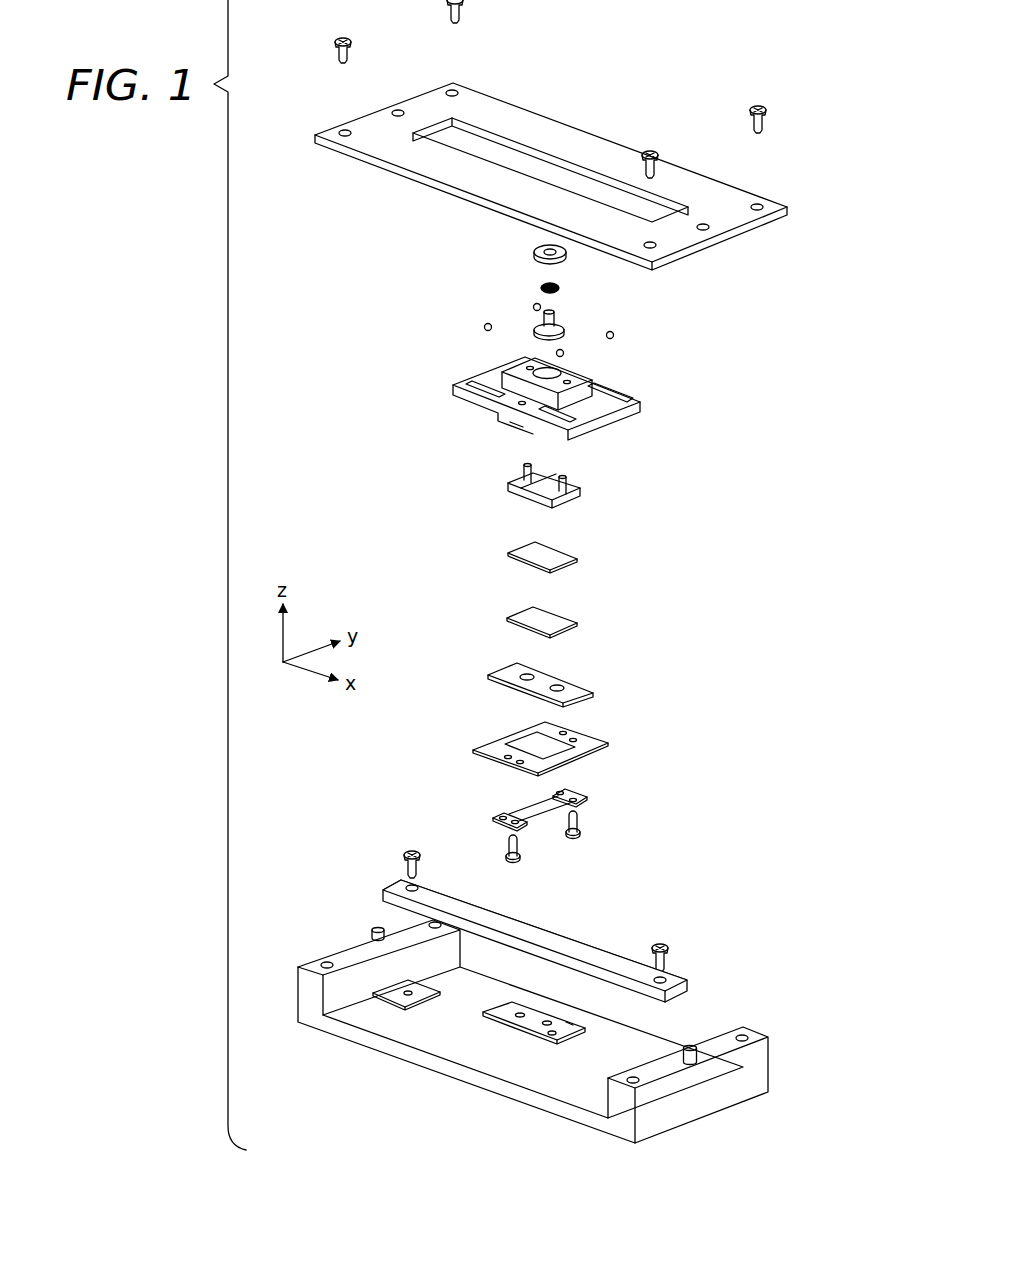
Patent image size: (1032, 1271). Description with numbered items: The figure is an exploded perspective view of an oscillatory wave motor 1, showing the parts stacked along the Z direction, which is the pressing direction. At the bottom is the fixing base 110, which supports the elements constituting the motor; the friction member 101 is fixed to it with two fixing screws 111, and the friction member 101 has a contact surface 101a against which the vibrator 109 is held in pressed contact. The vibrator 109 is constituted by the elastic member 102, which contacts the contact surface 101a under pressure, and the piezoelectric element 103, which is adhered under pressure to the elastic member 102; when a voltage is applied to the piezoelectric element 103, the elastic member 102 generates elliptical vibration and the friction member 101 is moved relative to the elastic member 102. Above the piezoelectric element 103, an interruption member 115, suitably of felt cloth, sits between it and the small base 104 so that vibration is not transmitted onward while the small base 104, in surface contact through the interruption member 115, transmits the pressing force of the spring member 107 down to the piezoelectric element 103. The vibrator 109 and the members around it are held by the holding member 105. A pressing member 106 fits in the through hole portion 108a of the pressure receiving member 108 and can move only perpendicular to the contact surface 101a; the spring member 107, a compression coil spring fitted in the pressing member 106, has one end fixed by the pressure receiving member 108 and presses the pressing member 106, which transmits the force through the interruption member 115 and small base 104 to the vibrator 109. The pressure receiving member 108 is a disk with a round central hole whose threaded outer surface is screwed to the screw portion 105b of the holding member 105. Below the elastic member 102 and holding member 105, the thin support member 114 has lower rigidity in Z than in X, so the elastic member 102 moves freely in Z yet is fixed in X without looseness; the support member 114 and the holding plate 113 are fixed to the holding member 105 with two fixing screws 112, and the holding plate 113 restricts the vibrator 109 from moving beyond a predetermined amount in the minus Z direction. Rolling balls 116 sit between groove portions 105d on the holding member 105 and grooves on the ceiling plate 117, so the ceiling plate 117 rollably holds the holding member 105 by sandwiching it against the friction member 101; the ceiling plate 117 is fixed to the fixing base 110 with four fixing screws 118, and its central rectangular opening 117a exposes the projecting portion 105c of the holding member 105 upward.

The oscillatory wave motor 1 is at (780, 360).
The friction member 101 is at (690, 983).
The contact surface 101a is at (587, 948).
The elastic member 102 is at (595, 688).
The piezoelectric element 103 is at (578, 620).
The small base 104 is at (582, 488).
The holding member 105 is at (647, 403).
The screw portion 105b is at (577, 365).
The projecting portion 105c is at (586, 394).
The groove portions 105d is at (622, 395).
The pressing member 106 is at (561, 311).
The spring member 107 is at (540, 288).
The pressure receiving member 108 is at (535, 253).
The through hole portion 108a is at (540, 246).
The vibrator 109 is at (657, 609).
The fixing base 110 is at (770, 1053).
The fixing screws 111 is at (433, 840).
The fixing screws 112 is at (582, 830).
The holding plate 113 is at (588, 797).
The support member 114 is at (610, 742).
The interruption member 115 is at (578, 557).
The rolling balls 116 is at (533, 307).
The ceiling plate 117 is at (790, 209).
The rectangular opening 117a is at (442, 144).
The fixing screws 118 is at (335, 42).